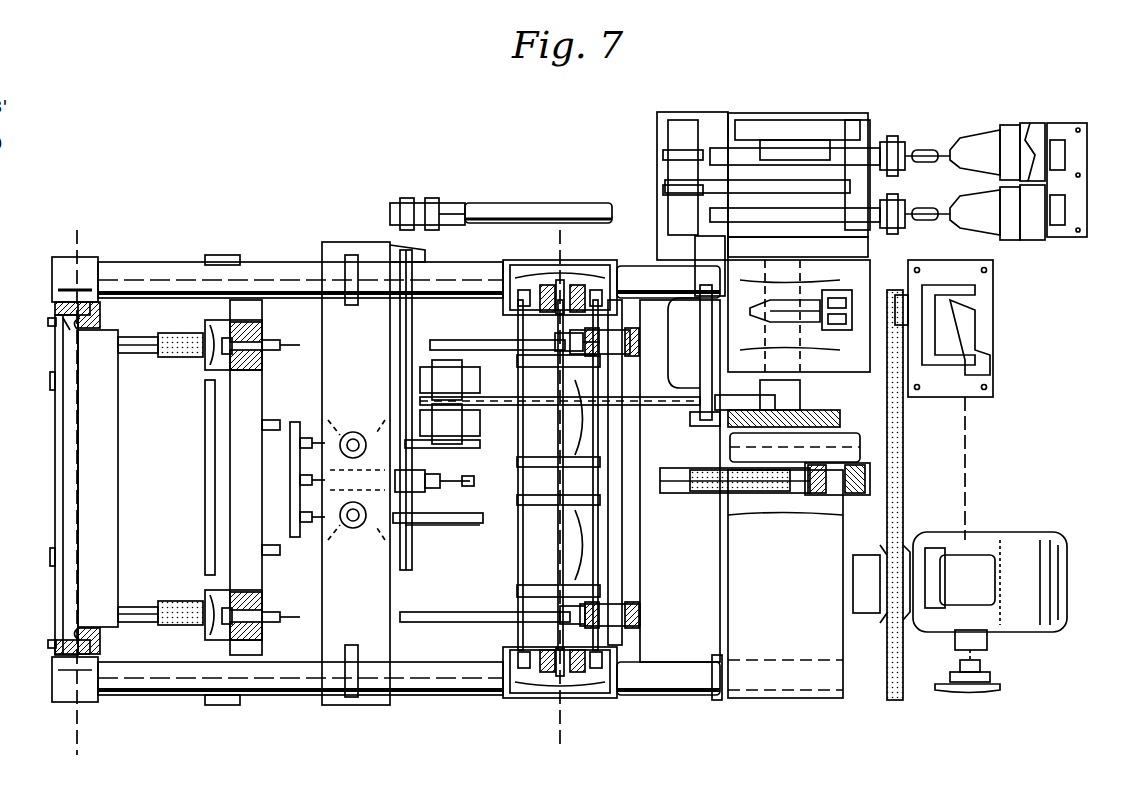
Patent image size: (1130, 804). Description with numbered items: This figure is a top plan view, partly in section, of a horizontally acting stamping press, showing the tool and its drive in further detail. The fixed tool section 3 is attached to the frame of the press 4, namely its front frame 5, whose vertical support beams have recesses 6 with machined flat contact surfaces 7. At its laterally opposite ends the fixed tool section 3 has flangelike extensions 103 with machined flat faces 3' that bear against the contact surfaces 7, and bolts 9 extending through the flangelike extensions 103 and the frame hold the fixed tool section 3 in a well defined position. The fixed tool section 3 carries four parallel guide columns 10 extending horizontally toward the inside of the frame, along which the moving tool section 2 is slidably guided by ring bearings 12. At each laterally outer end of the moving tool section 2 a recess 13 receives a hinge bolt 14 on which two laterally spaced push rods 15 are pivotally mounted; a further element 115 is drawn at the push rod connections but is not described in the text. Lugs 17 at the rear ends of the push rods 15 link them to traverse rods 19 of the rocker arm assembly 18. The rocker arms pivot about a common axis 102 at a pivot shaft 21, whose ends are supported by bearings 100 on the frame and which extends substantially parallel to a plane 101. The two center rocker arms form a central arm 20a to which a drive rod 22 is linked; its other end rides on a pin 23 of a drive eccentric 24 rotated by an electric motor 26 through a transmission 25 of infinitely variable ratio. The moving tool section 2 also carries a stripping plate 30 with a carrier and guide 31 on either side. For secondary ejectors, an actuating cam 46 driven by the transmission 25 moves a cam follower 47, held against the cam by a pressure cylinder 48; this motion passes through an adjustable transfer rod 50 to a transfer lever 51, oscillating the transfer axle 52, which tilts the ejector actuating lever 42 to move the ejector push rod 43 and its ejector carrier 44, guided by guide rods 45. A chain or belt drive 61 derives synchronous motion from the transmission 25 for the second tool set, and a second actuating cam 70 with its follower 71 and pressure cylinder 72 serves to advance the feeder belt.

The moving tool section 2 is at (246, 477).
The fixed tool section 3 is at (46, 485).
The machined flat faces 3' is at (86, 475).
The frame of the press 4 is at (303, 248).
The front frame 5 is at (58, 305).
The recesses 6 is at (62, 290).
The contact surface 7 is at (72, 325).
The bolts 9 is at (48, 322).
The guide columns 10 is at (140, 353).
The ring bearings 12 is at (185, 357).
The recess 13 is at (232, 345).
The hinge bolt 14 is at (255, 348).
The push rods 15 is at (492, 340).
The lugs 17 is at (628, 355).
The rocker arm assembly 18 is at (648, 546).
The traverse rods 19 is at (622, 520).
The central arm 20a is at (520, 475).
The pivot shaft 21 is at (558, 280).
The drive rod 22 is at (705, 493).
The pin 23 is at (850, 495).
The drive eccentric 24 is at (832, 442).
The transmission 25 is at (850, 370).
The electric motor 26 is at (980, 558).
The stripping plate 30 is at (205, 465).
The carrier and guide 31 is at (272, 420).
The ejector actuating lever 42 is at (466, 523).
The ejector push rod 43 is at (434, 488).
The ejector carrier 44 is at (290, 498).
The guide rods 45 is at (482, 442).
The actuating cam 46 is at (712, 215).
The cam follower 47 is at (905, 222).
The pressure cylinder 48 is at (1030, 237).
The transfer rod 50 is at (580, 203).
The transfer lever 51 is at (448, 203).
The transfer axle 52 is at (400, 360).
The chain or belt drive 61 is at (652, 405).
The second actuating cam 70 is at (818, 150).
The follower 71 is at (890, 142).
The pressure cylinder 72 is at (1025, 130).
The bearings 100 is at (585, 282).
The plane 101 is at (62, 490).
The common axis 102 is at (562, 245).
The flangelike extensions 103 is at (68, 325).
The bolt 115 is at (295, 342).